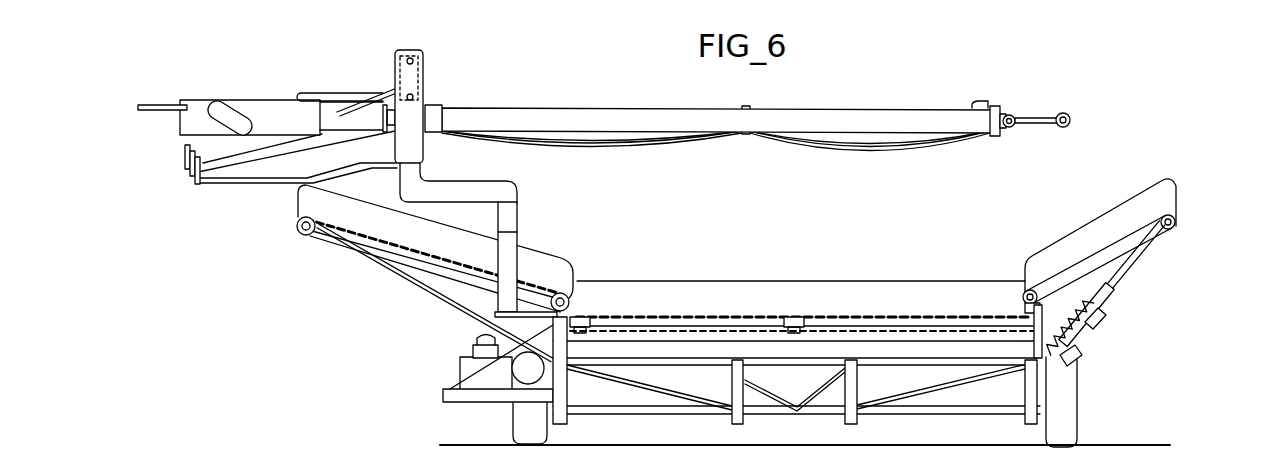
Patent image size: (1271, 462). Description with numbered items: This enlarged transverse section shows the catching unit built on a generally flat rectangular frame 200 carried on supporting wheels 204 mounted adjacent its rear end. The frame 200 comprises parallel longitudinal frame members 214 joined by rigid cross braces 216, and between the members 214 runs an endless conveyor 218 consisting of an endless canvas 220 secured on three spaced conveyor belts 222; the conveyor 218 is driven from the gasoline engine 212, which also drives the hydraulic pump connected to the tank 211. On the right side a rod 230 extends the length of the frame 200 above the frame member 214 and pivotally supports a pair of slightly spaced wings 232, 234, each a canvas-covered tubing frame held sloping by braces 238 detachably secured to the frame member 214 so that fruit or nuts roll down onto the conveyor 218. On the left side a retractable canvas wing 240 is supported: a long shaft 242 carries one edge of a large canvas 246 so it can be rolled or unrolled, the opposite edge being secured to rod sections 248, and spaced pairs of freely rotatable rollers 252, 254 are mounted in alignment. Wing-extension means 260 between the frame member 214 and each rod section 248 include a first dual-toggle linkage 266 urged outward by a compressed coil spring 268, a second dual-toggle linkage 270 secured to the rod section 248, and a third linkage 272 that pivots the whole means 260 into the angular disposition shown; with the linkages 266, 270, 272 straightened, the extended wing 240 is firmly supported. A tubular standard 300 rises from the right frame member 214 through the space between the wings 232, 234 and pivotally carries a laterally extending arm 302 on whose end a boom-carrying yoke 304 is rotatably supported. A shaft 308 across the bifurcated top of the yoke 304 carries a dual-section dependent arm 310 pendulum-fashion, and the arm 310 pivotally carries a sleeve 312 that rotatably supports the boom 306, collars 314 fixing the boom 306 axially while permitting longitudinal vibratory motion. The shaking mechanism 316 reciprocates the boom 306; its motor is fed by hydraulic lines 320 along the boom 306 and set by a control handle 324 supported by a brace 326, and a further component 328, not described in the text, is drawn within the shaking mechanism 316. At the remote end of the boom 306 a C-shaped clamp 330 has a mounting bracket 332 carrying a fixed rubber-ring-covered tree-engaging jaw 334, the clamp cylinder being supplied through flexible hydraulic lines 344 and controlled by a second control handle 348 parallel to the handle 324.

The frame 200 is at (820, 357).
The wheels 204 is at (522, 416).
The tank 211 is at (528, 368).
The gasoline engine 212 is at (462, 366).
The longitudinal frame members 214 is at (560, 347).
The cross braces 216 is at (657, 350).
The endless conveyor 218 is at (834, 281).
The canvas 220 is at (682, 290).
The conveyor belts 222 is at (572, 318).
The rod 230 is at (571, 296).
The wing 232 is at (312, 197).
The wing 234 is at (297, 224).
The braces 238 is at (447, 298).
The retractable canvas wing 240 is at (1020, 238).
The long shaft 242 is at (1022, 296).
The canvas 246 is at (1088, 228).
The rod sections 248 is at (1178, 228).
The rollers 252 is at (1043, 302).
The rollers 254 is at (1027, 309).
The wing-extension means 260 is at (1144, 283).
The first dual-toggle linkage 266 is at (1095, 318).
The coil spring 268 is at (1082, 357).
The second dual-toggle linkage 270 is at (1112, 292).
The third linkage 272 is at (1100, 332).
The tubular standard 300 is at (514, 248).
The laterally extending arm 302 is at (463, 187).
The boom-carrying yoke 304 is at (426, 82).
The arm 306 is at (862, 112).
The shaft 308 is at (414, 58).
The dual-section dependent arm 310 is at (411, 55).
The sleeve 312 is at (430, 106).
The collars 314 is at (386, 121).
The shaking mechanism 316 is at (213, 84).
The hydraulic lines 320 is at (337, 92).
The control handle 324 is at (388, 88).
The brace 326 is at (228, 177).
The cylinder 328 is at (163, 111).
The C-shaped clamp 330 is at (1015, 103).
The mounting bracket 332 is at (1045, 124).
The tree-engaging jaw 334 is at (1052, 103).
The flexible hydraulic lines 344 is at (682, 137).
The second control handle 348 is at (322, 145).